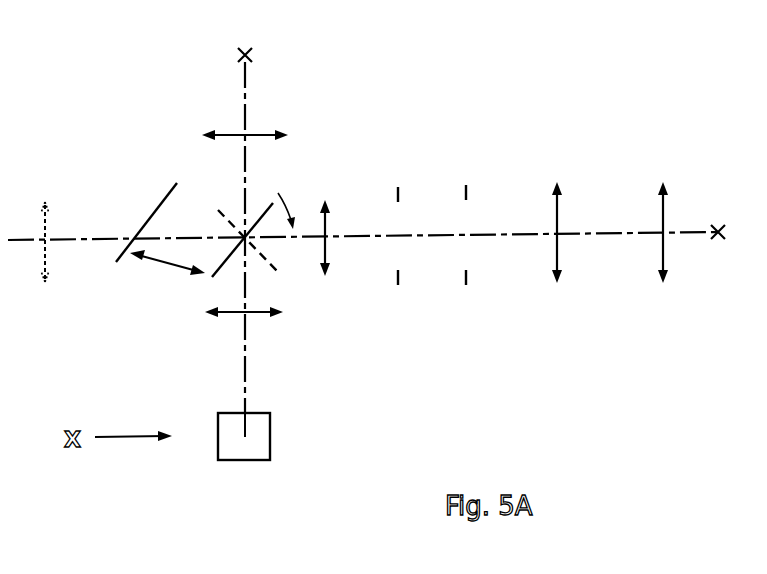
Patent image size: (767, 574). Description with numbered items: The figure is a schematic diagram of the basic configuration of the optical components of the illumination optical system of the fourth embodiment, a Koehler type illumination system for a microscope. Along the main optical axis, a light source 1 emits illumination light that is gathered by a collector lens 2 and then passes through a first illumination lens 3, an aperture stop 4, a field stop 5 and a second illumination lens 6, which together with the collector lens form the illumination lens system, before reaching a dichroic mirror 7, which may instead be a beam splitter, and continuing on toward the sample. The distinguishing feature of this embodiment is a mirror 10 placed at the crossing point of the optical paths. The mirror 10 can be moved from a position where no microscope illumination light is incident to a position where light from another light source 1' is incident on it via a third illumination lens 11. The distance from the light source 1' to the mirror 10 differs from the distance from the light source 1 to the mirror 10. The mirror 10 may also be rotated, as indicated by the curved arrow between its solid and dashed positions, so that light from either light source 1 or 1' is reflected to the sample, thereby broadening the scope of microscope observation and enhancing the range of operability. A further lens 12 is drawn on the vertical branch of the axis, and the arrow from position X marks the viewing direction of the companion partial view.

The light source 1 is at (731, 203).
The another light source 1' is at (283, 60).
The collector lens 2 is at (665, 210).
The first illumination lens 3 is at (560, 210).
The aperture stop 4 is at (466, 190).
The field stop 5 is at (398, 192).
The second illumination lens 6 is at (330, 228).
The dichroic mirror 7 is at (253, 460).
The mirror 10 is at (163, 197).
The third illumination lens 11 is at (253, 313).
The lens 12 is at (262, 130).